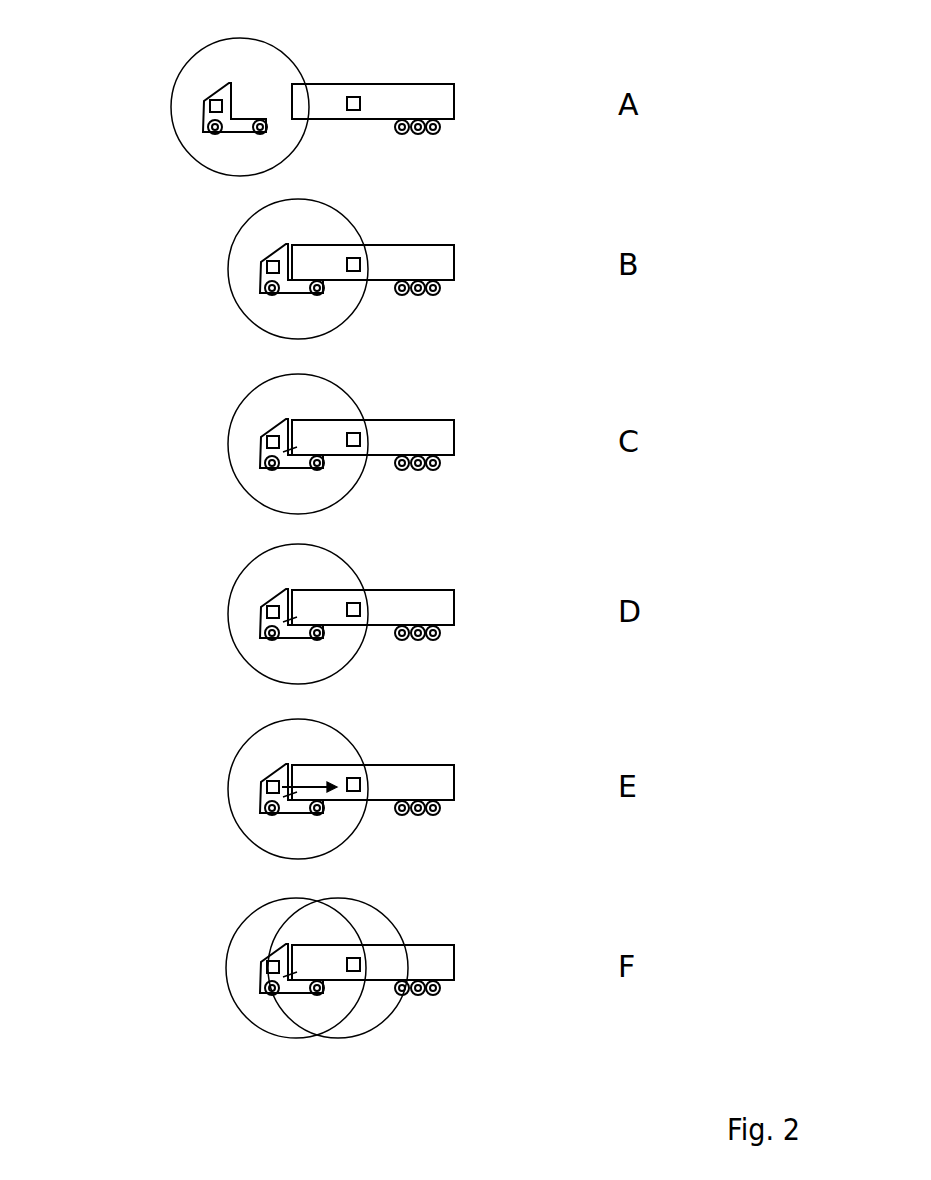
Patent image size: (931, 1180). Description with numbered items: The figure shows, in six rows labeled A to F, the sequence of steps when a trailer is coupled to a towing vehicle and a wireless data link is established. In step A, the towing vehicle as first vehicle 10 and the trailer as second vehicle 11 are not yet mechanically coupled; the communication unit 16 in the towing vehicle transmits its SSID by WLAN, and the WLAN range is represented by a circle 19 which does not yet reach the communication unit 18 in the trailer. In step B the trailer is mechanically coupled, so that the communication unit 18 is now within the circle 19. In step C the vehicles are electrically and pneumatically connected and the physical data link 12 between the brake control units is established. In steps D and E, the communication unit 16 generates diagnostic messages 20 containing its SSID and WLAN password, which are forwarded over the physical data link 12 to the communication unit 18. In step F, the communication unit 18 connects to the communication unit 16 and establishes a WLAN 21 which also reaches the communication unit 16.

The first vehicle 10 is at (203, 90).
The second vehicle 11 is at (418, 97).
The physical data link 12 is at (294, 455).
The communication unit 16 is at (208, 112).
The communication unit 18 is at (353, 97).
The circle 19 is at (200, 50).
The diagnostic messages 20 is at (313, 780).
The WLAN 21 is at (377, 1023).